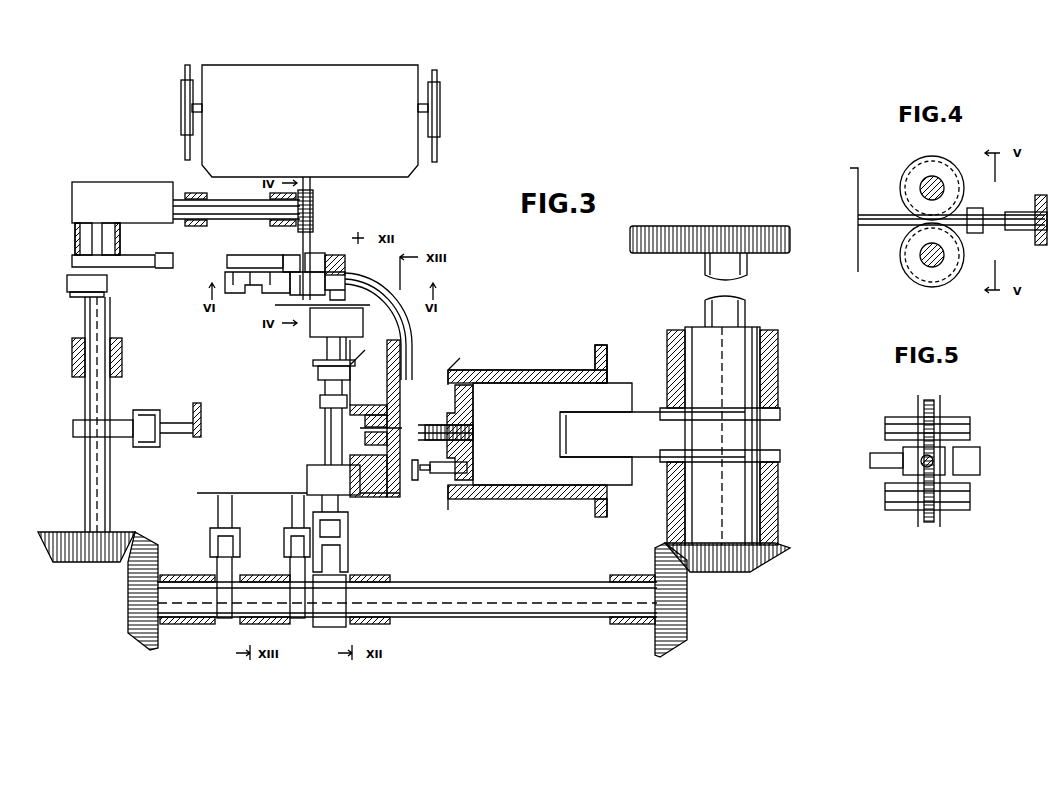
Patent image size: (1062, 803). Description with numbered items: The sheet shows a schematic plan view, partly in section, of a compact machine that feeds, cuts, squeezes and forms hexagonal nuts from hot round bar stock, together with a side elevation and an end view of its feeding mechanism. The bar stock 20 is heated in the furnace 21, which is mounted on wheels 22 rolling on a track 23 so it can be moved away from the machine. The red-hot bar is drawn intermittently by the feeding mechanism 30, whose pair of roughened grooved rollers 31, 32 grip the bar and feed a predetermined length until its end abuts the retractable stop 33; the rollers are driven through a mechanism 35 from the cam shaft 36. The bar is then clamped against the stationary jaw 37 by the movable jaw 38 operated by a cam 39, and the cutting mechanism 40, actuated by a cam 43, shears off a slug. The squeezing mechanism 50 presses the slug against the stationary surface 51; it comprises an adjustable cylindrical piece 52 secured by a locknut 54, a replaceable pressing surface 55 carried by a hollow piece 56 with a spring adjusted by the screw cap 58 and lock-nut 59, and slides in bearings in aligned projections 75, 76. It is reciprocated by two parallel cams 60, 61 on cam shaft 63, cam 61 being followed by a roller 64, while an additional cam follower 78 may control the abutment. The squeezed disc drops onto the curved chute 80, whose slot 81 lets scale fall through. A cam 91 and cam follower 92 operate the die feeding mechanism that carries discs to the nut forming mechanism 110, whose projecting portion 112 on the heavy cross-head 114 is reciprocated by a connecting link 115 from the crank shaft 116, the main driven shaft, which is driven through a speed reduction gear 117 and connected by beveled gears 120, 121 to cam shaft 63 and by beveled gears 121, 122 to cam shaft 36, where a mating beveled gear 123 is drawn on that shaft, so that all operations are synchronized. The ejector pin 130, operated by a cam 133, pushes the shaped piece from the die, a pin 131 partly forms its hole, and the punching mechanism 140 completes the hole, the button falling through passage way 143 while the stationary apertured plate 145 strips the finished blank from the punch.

In FIG. 3, the bar stock 20 is at (312, 185).
In FIG. 4, the bar stock 20 is at (870, 227).
In FIG. 3, the furnace 21 is at (312, 120).
In FIG. 4, the furnace 21 is at (858, 168).
In FIG. 3, the wheels 22 is at (181, 100).
In FIG. 3, the track 23 is at (185, 148).
In FIG. 3, the feeding mechanism 30 is at (314, 214).
In FIG. 4, the feeding mechanism 30 is at (950, 157).
In FIG. 5, the feeding mechanism 30 is at (947, 409).
In FIG. 3, the grooved roller 31 is at (314, 199).
In FIG. 4, the grooved roller 31 is at (912, 168).
In FIG. 5, the grooved roller 31 is at (920, 405).
In FIG. 4, the grooved roller 32 is at (908, 280).
In FIG. 5, the grooved roller 32 is at (940, 520).
In FIG. 3, the retractable stop 33 is at (298, 292).
In FIG. 4, the retractable stop 33 is at (1022, 230).
In FIG. 3, the drive mechanism 35 is at (186, 204).
In FIG. 3, the cam shaft 36 is at (102, 333).
In FIG. 3, the stationary jaw 37 is at (318, 250).
In FIG. 4, the stationary jaw 37 is at (983, 208).
In FIG. 5, the stationary jaw 37 is at (945, 470).
In FIG. 3, the movable jaw 38 is at (280, 255).
In FIG. 5, the movable jaw 38 is at (905, 470).
In FIG. 3, the cam 39 is at (122, 250).
In FIG. 3, the cutting mechanism 40 is at (260, 290).
In FIG. 3, the cam 43 is at (107, 290).
In FIG. 3, the squeezing mechanism 50 is at (322, 347).
In FIG. 3, the stationary surface 51 is at (335, 255).
In FIG. 3, the cylindrical piece 52 is at (326, 436).
In FIG. 3, the locknut 54 is at (320, 403).
In FIG. 3, the pressing surface 55 is at (340, 290).
In FIG. 3, the hollow piece 56 is at (350, 349).
In FIG. 3, the screw cap 58 is at (318, 374).
In FIG. 3, the lock-nut 59 is at (356, 364).
In FIG. 3, the cam 60 is at (328, 627).
In FIG. 3, the cam 61 is at (300, 620).
In FIG. 3, the cam shaft 63 is at (510, 590).
In FIG. 3, the roller 64 is at (344, 549).
In FIG. 3, the projection 75 is at (298, 480).
In FIG. 3, the projection 76 is at (336, 322).
In FIG. 3, the cam follower 78 is at (288, 540).
In FIG. 3, the chute 80 is at (412, 353).
In FIG. 3, the slot 81 is at (412, 336).
In FIG. 3, the cam 91 is at (222, 620).
In FIG. 3, the cam follower 92 is at (210, 540).
In FIG. 3, the nut forming mechanism 110 is at (426, 418).
In FIG. 3, the projecting die portion 112 is at (450, 412).
In FIG. 3, the cross-head 114 is at (540, 431).
In FIG. 3, the connecting link 115 is at (648, 448).
In FIG. 3, the crank shaft 116 is at (765, 480).
In FIG. 3, the speed reduction gear 117 is at (733, 226).
In FIG. 3, the beveled gear 120 is at (724, 572).
In FIG. 3, the beveled gear 121 is at (687, 612).
In FIG. 3, the beveled gear 122 is at (128, 603).
In FIG. 3, the bevel gear 123 is at (78, 562).
In FIG. 3, the ejector pin 130 is at (368, 415).
In FIG. 3, the pin 131 is at (398, 428).
In FIG. 3, the cam 133 is at (118, 418).
In FIG. 3, the punching mechanism 140 is at (433, 475).
In FIG. 3, the passage way 143 is at (400, 497).
In FIG. 3, the apertured plate 145 is at (415, 485).